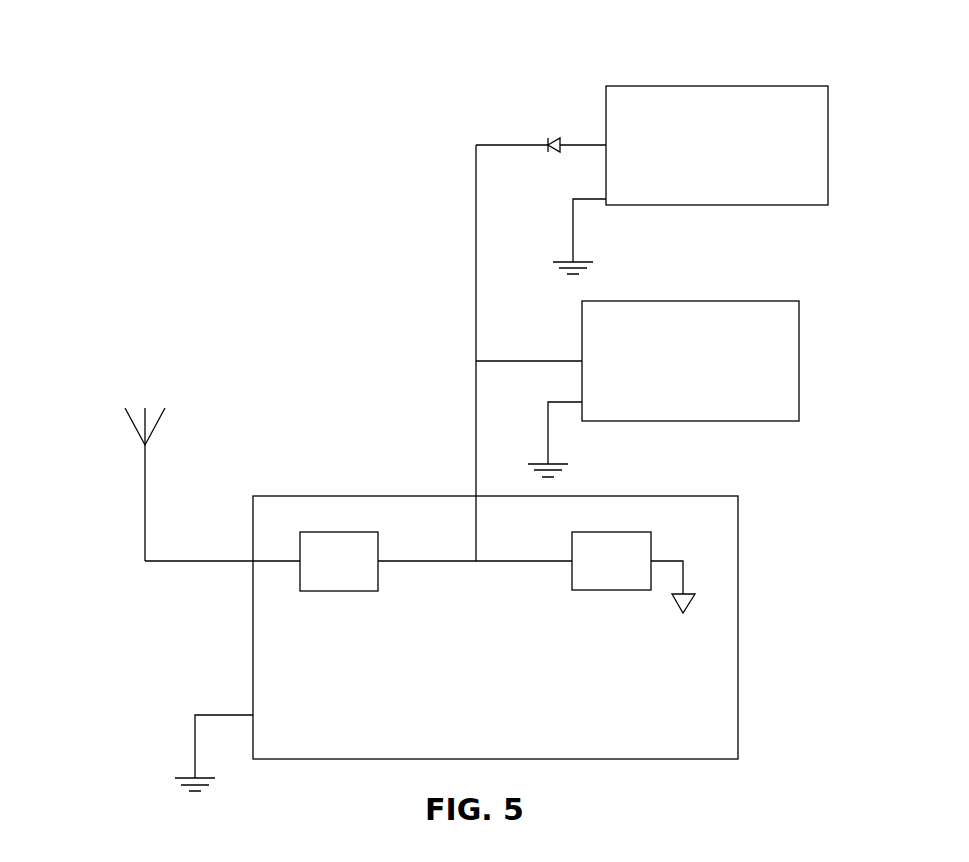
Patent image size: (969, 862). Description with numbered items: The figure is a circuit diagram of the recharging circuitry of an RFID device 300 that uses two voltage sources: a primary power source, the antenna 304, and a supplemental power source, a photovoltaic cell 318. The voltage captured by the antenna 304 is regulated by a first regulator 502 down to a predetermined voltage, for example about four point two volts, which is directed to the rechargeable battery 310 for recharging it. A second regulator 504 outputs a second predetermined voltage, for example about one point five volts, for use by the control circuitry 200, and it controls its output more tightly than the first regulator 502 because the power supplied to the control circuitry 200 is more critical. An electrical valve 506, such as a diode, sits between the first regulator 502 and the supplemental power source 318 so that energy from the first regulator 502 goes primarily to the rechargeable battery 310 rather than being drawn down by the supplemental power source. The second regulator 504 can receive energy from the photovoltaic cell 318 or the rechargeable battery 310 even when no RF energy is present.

The Radio Frequency Identification device 300 is at (190, 127).
The photovoltaic cell 318 is at (716, 86).
The rechargeable battery 310 is at (762, 301).
The electrical valve 506 is at (560, 138).
The control circuitry 200 is at (738, 698).
The first regulator 502 is at (338, 532).
The second regulator 504 is at (610, 532).
The antenna 304 is at (143, 464).